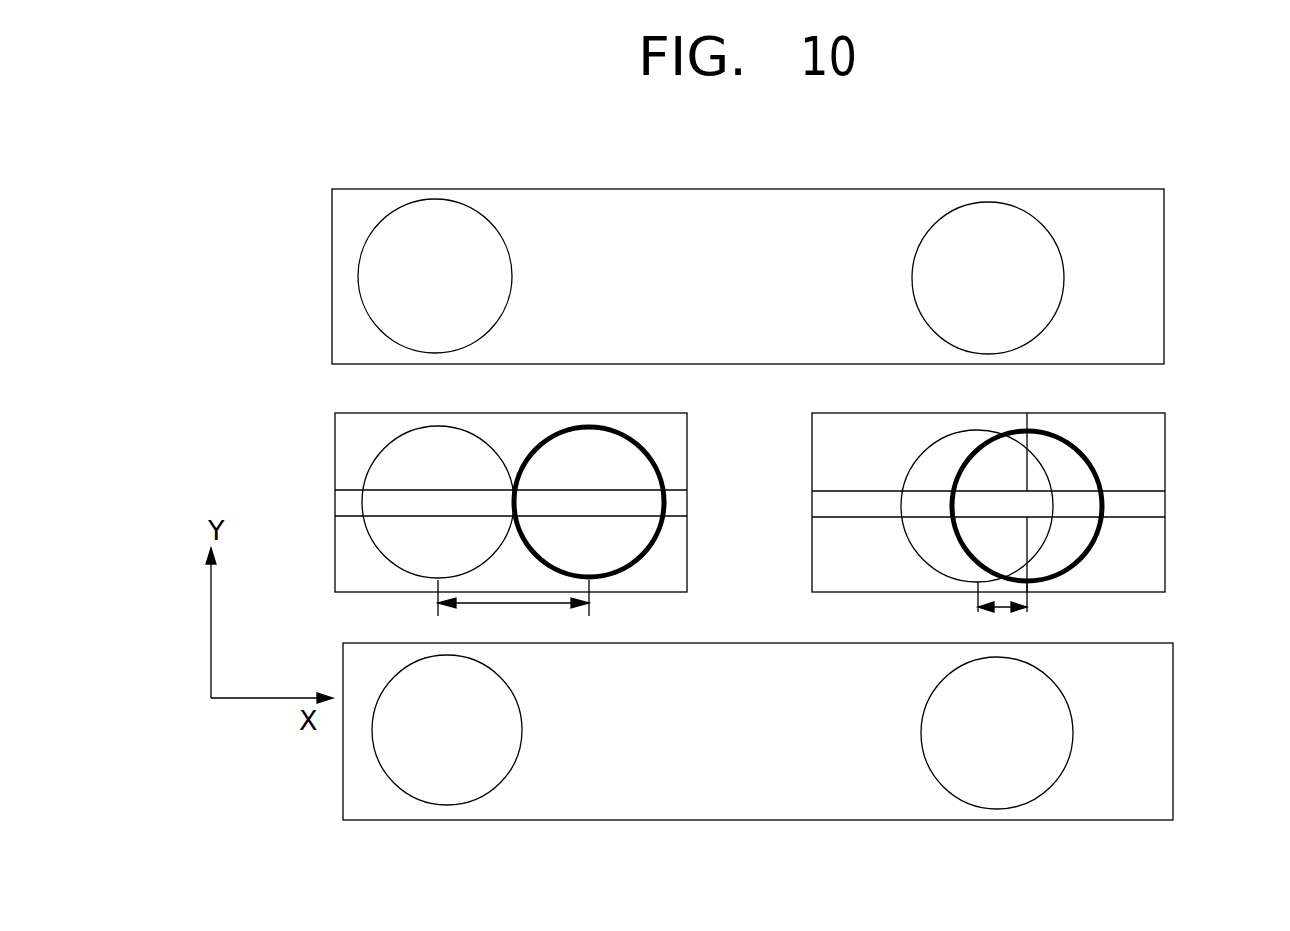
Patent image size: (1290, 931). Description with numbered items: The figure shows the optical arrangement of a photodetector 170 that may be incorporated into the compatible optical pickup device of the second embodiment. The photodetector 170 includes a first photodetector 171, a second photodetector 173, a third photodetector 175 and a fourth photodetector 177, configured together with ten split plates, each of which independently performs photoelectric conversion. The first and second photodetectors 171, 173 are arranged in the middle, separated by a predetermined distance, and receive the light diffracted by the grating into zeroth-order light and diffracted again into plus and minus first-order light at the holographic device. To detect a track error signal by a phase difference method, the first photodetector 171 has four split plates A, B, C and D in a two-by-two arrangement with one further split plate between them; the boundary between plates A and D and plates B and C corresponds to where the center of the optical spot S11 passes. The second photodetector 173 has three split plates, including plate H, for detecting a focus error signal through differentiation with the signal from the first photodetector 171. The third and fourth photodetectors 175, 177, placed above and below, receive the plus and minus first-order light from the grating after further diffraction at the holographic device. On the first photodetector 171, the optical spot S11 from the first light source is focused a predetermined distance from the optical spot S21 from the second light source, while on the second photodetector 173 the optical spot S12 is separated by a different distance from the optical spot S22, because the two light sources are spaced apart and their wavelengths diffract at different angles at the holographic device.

The photodetector 170 is at (270, 243).
The first photodetector 171 is at (1185, 485).
The second photodetector 173 is at (316, 483).
The third photodetector 175 is at (332, 296).
The fourth photodetector 177 is at (343, 792).
The optical spot S11 is at (1075, 566).
The optical spot S12 is at (621, 541).
The optical spot S21 is at (945, 556).
The optical spot S22 is at (380, 542).